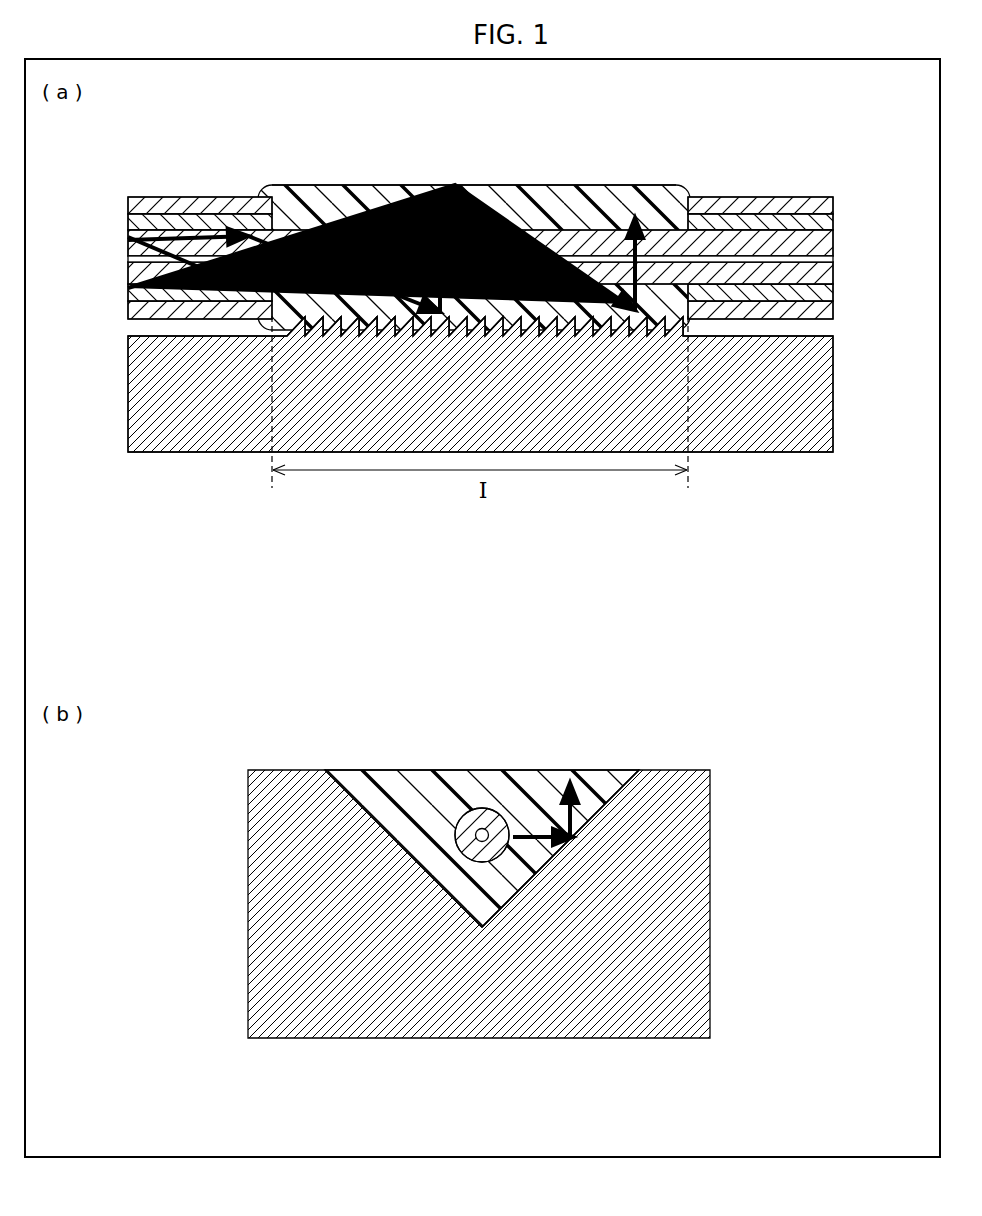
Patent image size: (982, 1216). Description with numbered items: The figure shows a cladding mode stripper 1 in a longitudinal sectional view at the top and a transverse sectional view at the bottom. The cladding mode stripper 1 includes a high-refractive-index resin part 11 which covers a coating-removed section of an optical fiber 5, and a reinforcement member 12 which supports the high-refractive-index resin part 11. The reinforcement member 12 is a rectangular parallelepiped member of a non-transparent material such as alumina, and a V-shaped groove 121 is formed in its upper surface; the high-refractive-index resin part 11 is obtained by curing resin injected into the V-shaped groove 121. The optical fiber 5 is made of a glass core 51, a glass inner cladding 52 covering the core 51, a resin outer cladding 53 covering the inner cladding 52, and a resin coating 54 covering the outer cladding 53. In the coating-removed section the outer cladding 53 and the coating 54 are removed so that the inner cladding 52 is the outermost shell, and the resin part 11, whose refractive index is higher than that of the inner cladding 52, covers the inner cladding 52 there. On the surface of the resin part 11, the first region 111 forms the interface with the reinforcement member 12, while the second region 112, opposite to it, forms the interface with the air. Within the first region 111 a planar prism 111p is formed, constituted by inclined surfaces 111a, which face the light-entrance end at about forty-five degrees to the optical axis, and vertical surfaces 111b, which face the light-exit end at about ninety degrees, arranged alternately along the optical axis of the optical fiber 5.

The cladding mode stripper 1 is at (870, 142).
The optical fiber 5 is at (503, 492).
The high-refractive-index resin part 11 is at (560, 186).
The reinforcement member 12 is at (833, 392).
The core 51 is at (674, 252).
The inner cladding 52 is at (718, 228).
The outer cladding 53 is at (762, 214).
The coating 54 is at (806, 198).
The first region 111 is at (480, 312).
The inclined surfaces 111a is at (318, 320).
The vertical surfaces 111b is at (380, 318).
The planar prism 111p is at (292, 118).
The second region 112 is at (510, 186).
The V-shaped groove 121 is at (336, 782).